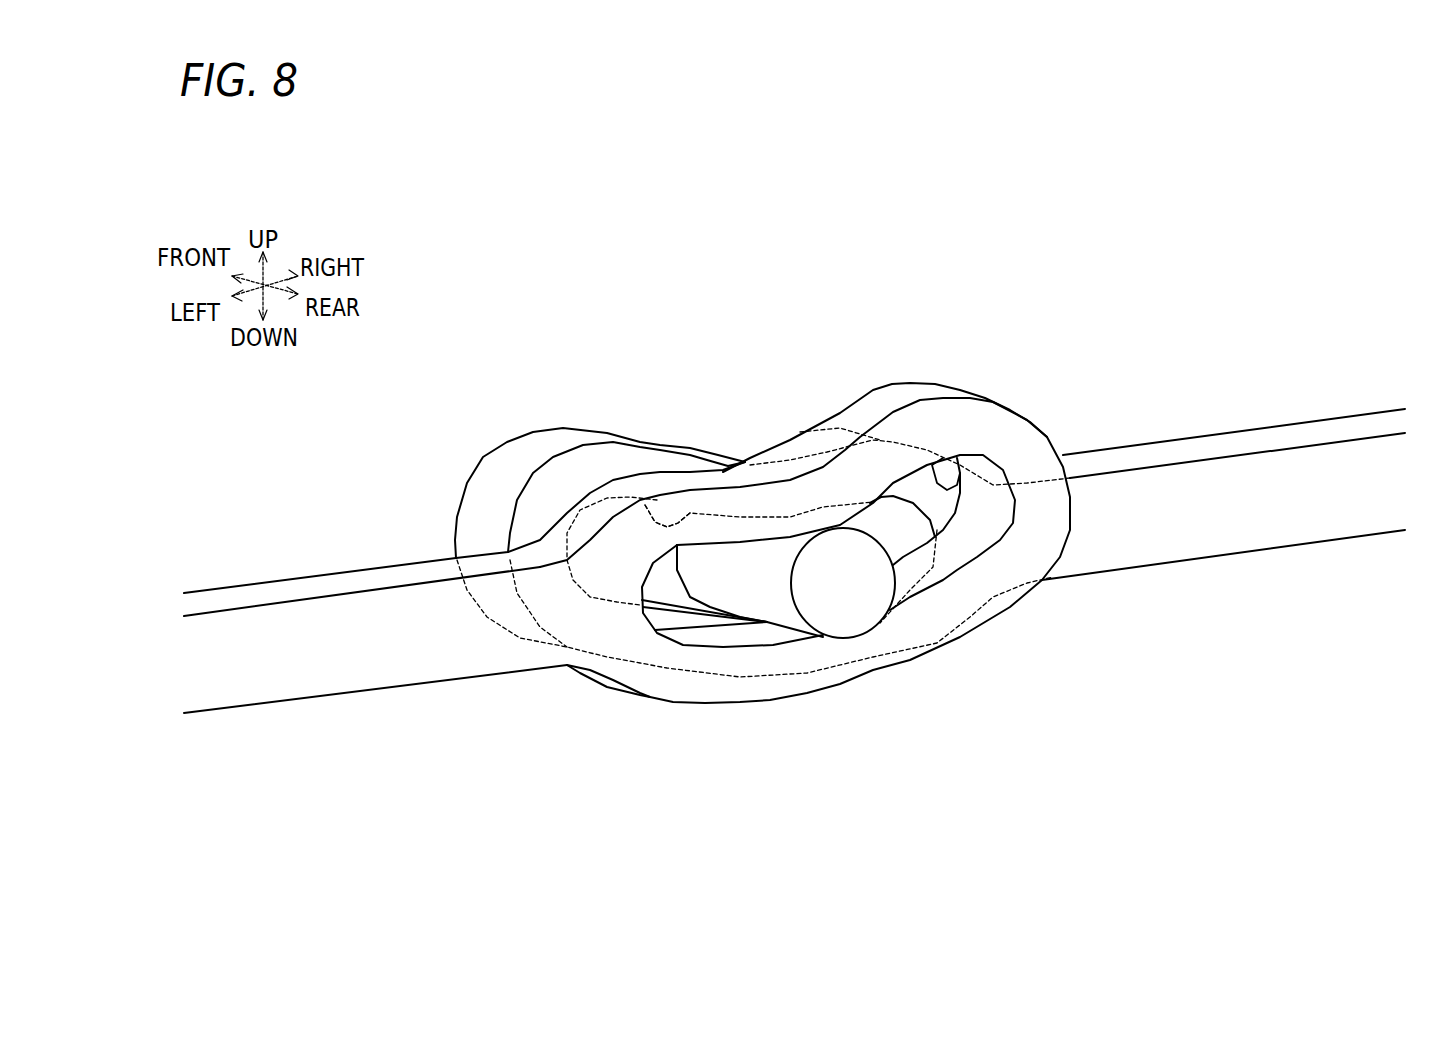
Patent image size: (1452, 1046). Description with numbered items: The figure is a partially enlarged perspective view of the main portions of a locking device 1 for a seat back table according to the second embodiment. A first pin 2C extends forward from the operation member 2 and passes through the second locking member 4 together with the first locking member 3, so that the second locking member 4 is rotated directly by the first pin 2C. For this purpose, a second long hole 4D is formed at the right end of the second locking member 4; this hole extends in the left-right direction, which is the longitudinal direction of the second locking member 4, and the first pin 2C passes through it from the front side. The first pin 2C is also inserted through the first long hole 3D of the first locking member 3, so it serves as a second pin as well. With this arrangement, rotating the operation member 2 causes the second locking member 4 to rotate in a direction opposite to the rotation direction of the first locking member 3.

The locking device 1 is at (1114, 278).
The operation member 2 is at (869, 633).
The first pin 2C is at (843, 585).
The first locking member 3 is at (1257, 437).
The first long hole 3D is at (965, 475).
The second locking member 4 is at (298, 582).
The second long hole 4D is at (688, 515).